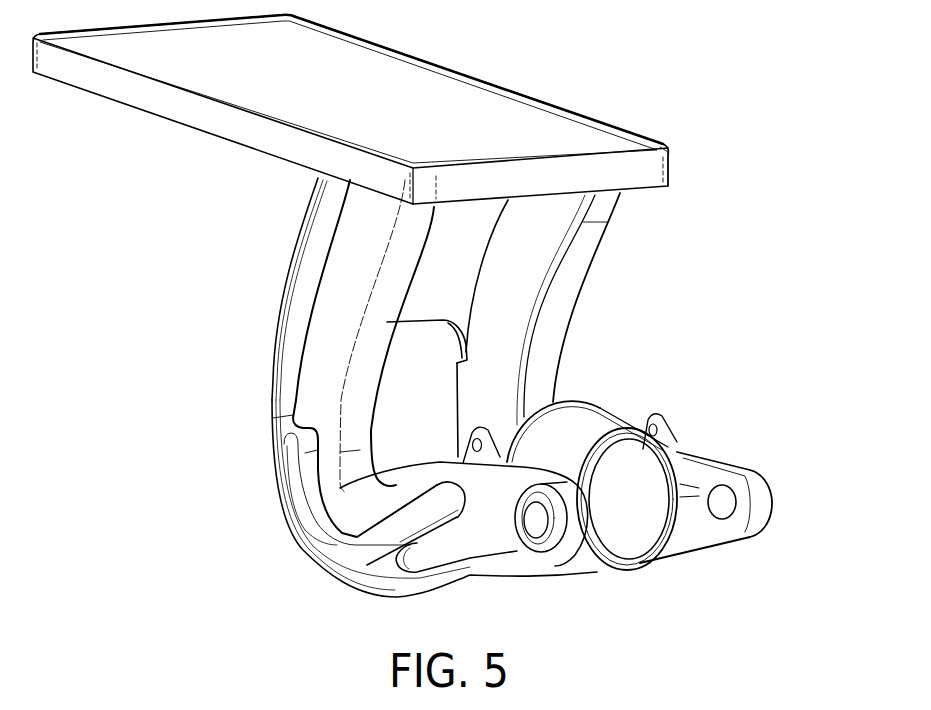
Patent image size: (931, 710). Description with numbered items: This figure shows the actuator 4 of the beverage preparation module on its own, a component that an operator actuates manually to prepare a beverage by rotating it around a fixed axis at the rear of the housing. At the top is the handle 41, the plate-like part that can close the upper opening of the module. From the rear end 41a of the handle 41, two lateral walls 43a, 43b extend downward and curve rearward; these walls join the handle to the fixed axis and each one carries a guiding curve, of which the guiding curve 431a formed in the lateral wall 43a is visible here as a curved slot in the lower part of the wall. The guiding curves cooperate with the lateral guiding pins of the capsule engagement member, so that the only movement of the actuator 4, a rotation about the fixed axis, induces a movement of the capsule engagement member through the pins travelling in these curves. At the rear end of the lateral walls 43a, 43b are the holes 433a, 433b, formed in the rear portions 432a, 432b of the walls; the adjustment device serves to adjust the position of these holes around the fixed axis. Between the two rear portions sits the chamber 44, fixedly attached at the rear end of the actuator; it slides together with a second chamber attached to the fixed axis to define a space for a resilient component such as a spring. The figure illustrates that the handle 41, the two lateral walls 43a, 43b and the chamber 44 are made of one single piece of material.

The actuator 4 is at (724, 127).
The handle 41 is at (390, 72).
The rear end of the actuator handle 41a is at (633, 146).
The lateral wall 43a is at (322, 327).
The lateral wall 43b is at (560, 293).
The guiding curve 431a is at (325, 547).
The first connecting arm 432a is at (575, 543).
The second connecting arm 432b is at (758, 507).
The hole 433a is at (540, 523).
The hole 433b is at (720, 503).
The chamber 44 is at (638, 462).